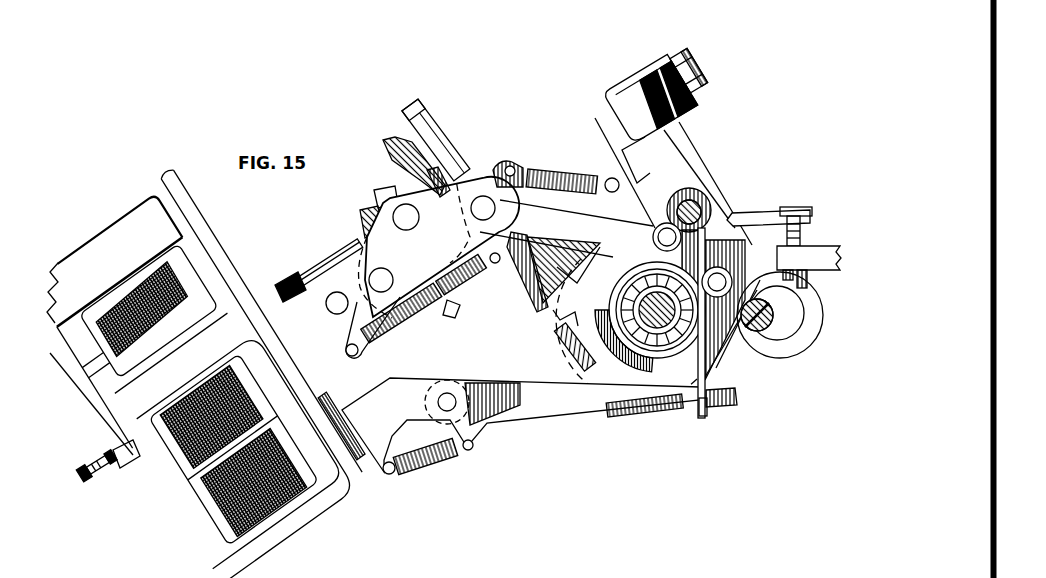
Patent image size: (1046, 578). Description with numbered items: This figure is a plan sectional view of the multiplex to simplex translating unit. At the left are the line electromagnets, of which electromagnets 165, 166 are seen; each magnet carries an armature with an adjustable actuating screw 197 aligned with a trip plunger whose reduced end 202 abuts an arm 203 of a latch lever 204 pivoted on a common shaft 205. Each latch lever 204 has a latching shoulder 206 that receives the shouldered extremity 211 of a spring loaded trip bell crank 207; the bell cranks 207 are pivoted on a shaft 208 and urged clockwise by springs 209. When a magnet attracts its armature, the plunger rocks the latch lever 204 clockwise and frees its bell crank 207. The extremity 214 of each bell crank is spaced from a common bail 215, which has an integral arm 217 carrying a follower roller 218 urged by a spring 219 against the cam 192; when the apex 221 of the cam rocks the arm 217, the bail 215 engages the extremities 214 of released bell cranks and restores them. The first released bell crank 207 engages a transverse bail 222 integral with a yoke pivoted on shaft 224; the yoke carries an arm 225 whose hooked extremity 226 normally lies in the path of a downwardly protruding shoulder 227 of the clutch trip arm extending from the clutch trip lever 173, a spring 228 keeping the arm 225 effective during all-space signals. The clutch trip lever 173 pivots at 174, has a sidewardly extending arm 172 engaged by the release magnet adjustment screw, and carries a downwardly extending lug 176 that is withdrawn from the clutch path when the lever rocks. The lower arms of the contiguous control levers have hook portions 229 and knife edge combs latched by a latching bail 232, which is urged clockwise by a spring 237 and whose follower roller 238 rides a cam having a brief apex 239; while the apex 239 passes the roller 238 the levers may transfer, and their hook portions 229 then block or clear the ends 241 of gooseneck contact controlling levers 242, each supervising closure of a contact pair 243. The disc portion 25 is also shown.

The disc 25 is at (584, 350).
The electromagnet 165 is at (210, 500).
The electromagnet 166 is at (198, 290).
The sidewardly extending arm 172 is at (786, 222).
The clutch trip lever 173 is at (746, 222).
The pivot 174 is at (697, 203).
The downwardly extending lug 176 is at (743, 363).
The cam 192 is at (643, 310).
The adjustable actuating screw 197 is at (93, 486).
The reduced diameter end of trip plunger 202 is at (330, 252).
The arm of latch lever 203 is at (355, 218).
The latch lever 204 is at (364, 222).
The common shaft 205 is at (378, 282).
The latching shoulder 206 is at (441, 316).
The trip bell crank 207 is at (403, 171).
The shaft 208 is at (484, 197).
The spring 209 is at (542, 160).
The shouldered extremity 211 is at (447, 306).
The extremity of bell crank 214 is at (388, 157).
The common bail 215 is at (408, 122).
The arm 217 is at (568, 215).
The follower roller 218 is at (653, 238).
The spring 219 is at (407, 327).
The apex 221 is at (607, 357).
The transverse bail 222 is at (478, 268).
The shaft 224 is at (445, 395).
The sidewardly extending arm 225 is at (733, 400).
The hooked extremity 226 is at (710, 408).
The downwardly protruding shoulder 227 is at (700, 414).
The spring 228 is at (440, 457).
The hook portion 229 is at (557, 320).
The latching bail 232 is at (560, 334).
The spring 237 is at (630, 418).
The follower roller 238 is at (807, 279).
The apex 239 is at (807, 302).
The end of gooseneck contact controlling lever 241 is at (570, 277).
The gooseneck contact controlling lever 242 is at (807, 343).
The contact pair 243 is at (623, 77).